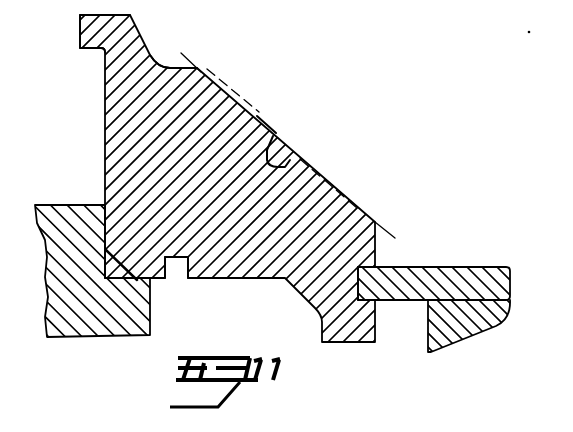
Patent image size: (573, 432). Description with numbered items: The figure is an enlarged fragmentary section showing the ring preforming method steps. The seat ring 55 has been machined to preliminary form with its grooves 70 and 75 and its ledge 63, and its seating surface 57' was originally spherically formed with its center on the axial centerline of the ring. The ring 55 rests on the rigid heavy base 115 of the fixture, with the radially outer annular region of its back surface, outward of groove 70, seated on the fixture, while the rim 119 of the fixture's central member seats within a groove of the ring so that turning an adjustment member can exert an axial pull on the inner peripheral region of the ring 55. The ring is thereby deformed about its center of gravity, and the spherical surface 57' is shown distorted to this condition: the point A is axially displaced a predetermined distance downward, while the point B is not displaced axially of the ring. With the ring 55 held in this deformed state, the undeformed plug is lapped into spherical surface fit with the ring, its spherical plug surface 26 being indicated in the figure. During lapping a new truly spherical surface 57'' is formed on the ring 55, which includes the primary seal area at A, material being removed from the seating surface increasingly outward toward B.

The seat ring 55 is at (100, 88).
The ledge 63 is at (81, 24).
The spherical plug surface 26 is at (197, 68).
The spherical surface 57' is at (282, 138).
The new truly spherical surface 57'' is at (282, 117).
The groove 75 is at (289, 166).
The groove 70 is at (186, 280).
The base 115 is at (143, 306).
The rim 119 is at (463, 248).
The point A is at (385, 225).
The point B is at (199, 59).